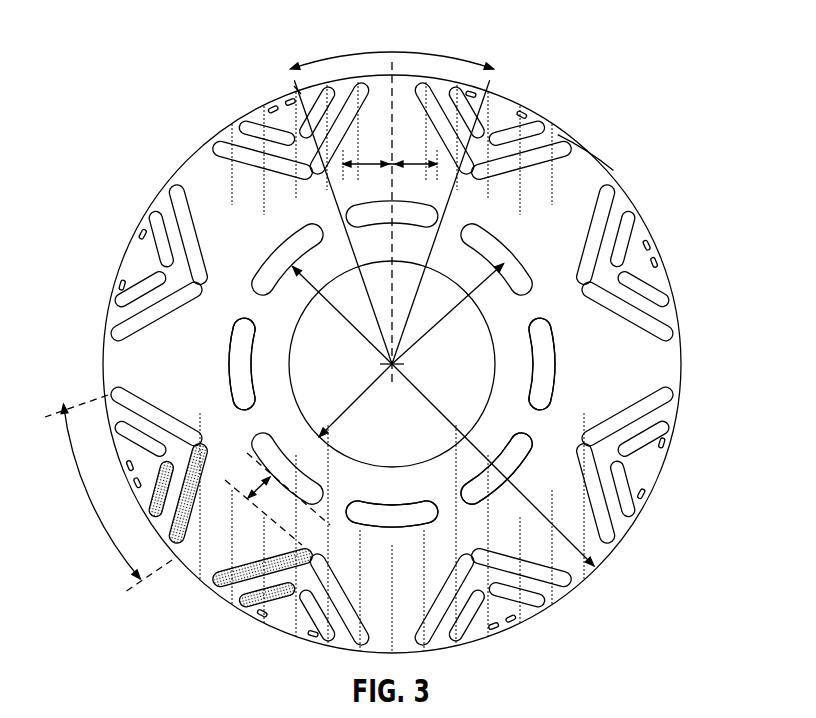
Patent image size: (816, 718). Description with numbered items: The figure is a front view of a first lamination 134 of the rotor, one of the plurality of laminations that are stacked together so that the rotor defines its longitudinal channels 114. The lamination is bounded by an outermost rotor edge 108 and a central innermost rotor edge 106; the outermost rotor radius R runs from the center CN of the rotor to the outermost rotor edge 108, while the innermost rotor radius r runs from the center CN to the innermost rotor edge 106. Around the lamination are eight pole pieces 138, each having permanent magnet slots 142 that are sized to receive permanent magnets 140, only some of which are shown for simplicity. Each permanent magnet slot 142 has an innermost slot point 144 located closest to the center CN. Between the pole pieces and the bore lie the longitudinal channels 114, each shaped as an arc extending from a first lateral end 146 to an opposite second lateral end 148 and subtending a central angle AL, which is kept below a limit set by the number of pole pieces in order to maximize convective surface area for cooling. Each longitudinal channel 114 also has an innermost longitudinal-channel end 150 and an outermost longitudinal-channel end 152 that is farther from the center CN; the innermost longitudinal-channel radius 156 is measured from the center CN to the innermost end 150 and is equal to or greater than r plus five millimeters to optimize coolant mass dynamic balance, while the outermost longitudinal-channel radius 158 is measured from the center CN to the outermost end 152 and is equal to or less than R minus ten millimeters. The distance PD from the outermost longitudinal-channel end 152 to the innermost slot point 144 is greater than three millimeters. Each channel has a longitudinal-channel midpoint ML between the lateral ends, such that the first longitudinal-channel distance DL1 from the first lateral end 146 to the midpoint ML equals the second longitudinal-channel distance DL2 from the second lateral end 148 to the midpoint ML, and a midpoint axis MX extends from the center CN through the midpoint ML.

The innermost rotor edge 106 is at (402, 467).
The outermost rotor edge 108 is at (678, 412).
The longitudinal channel 114 is at (417, 367).
The first lamination 134 is at (586, 152).
The pole piece 138 is at (88, 500).
The permanent magnet 140 is at (250, 474).
The permanent magnet slot 142 is at (180, 185).
The innermost slot point 144 is at (308, 556).
The first lateral end 146 is at (434, 216).
The second lateral end 148 is at (390, 205).
The innermost longitudinal-channel end 150 is at (283, 277).
The outermost longitudinal-channel end 152 is at (399, 272).
The innermost longitudinal-channel radius 156 is at (335, 309).
The outermost longitudinal-channel radius 158 is at (428, 326).
The center of the rotor CN is at (397, 363).
The central angle AL is at (393, 52).
The longitudinal-channel midpoint ML is at (392, 196).
The midpoint axis MX is at (297, 90).
The first longitudinal-channel distance DL1 is at (410, 114).
The second longitudinal-channel distance DL2 is at (390, 120).
The distance from outermost longitudinal-channel end to innermost slot point PD is at (250, 476).
The outermost rotor radius R is at (469, 440).
The innermost rotor radius r is at (368, 392).